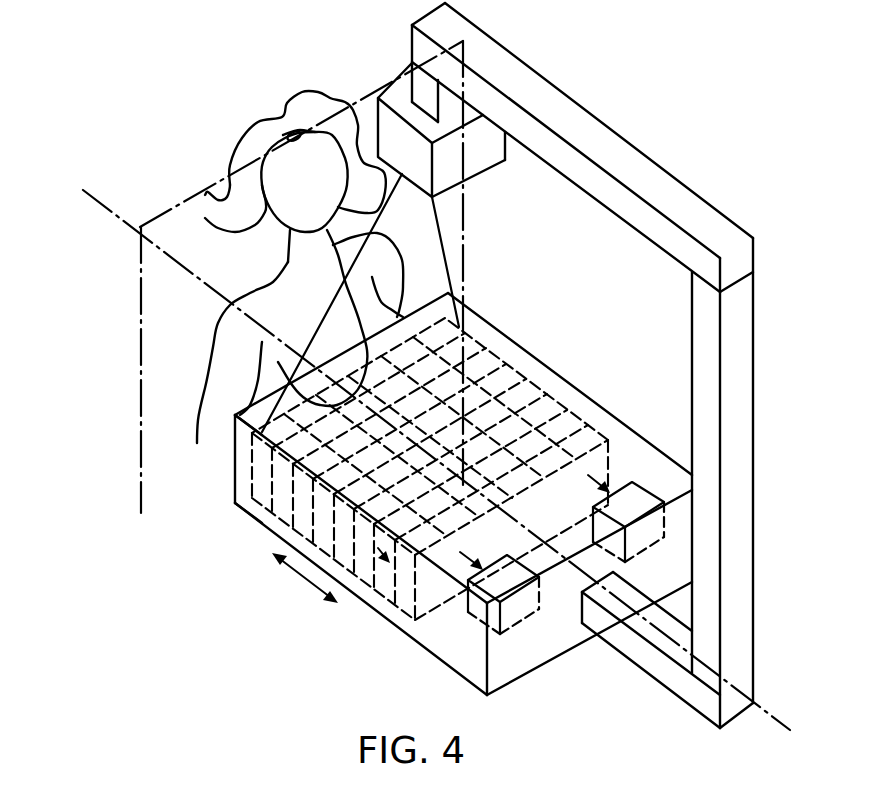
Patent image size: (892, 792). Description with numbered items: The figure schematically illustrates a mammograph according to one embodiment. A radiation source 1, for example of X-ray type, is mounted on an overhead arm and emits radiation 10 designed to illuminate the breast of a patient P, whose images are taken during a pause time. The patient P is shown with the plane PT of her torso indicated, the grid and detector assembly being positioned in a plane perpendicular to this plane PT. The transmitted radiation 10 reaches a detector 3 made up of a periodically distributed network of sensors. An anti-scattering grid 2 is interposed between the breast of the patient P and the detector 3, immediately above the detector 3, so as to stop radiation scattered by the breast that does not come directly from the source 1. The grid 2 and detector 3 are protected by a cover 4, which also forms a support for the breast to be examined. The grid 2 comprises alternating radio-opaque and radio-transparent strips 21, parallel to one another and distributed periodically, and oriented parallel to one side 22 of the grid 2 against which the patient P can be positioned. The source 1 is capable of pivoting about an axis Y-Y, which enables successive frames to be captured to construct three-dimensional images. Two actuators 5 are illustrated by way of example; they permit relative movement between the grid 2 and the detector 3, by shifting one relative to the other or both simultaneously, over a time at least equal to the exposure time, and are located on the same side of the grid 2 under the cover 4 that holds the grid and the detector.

The radiation source 1 is at (487, 175).
The radiation 10 is at (452, 251).
The anti-scattering grid 2 is at (390, 568).
The detector 3 is at (425, 494).
The cover 4 is at (425, 494).
The actuator 5 is at (637, 561).
The strips 21 is at (603, 428).
The side of the grid 22 is at (226, 470).
The patient P is at (262, 124).
The axis Y- Y is at (437, 453).
The plane of the torso of the patient PT is at (138, 287).